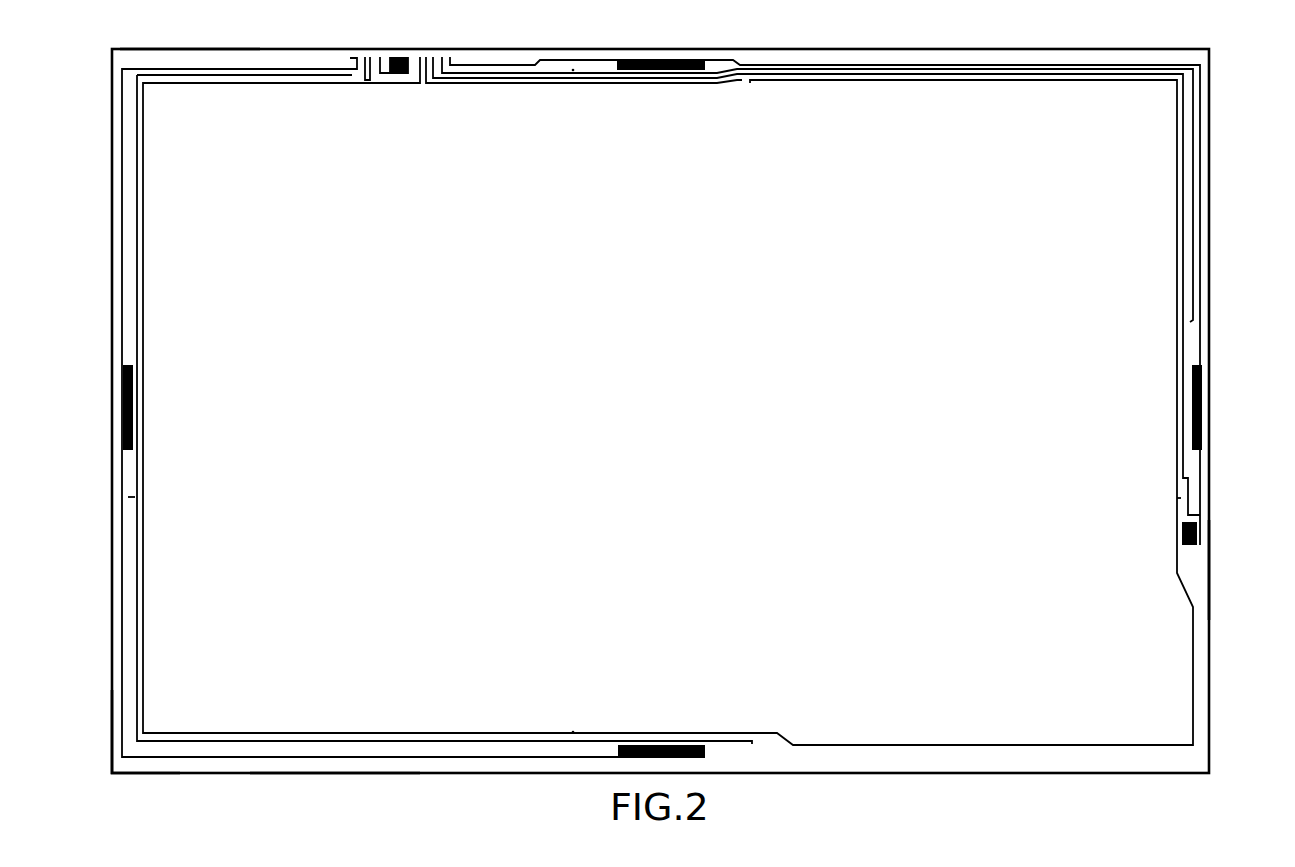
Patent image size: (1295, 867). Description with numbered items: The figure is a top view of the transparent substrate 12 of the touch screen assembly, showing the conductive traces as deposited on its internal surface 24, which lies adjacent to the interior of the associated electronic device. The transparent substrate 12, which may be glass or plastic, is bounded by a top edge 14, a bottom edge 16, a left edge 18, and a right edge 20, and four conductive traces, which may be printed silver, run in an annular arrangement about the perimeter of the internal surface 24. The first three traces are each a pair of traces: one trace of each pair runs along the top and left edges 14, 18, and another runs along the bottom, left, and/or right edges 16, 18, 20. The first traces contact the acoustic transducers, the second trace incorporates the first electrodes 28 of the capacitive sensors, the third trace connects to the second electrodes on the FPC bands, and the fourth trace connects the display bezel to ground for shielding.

The transparent substrate 12 is at (1209, 70).
The top edge 14 is at (1225, 567).
The bottom edge 16 is at (100, 722).
The left edge 18 is at (180, 46).
The right edge 20 is at (335, 788).
The internal surface 24 is at (190, 712).
The first electrode 28 is at (667, 60).